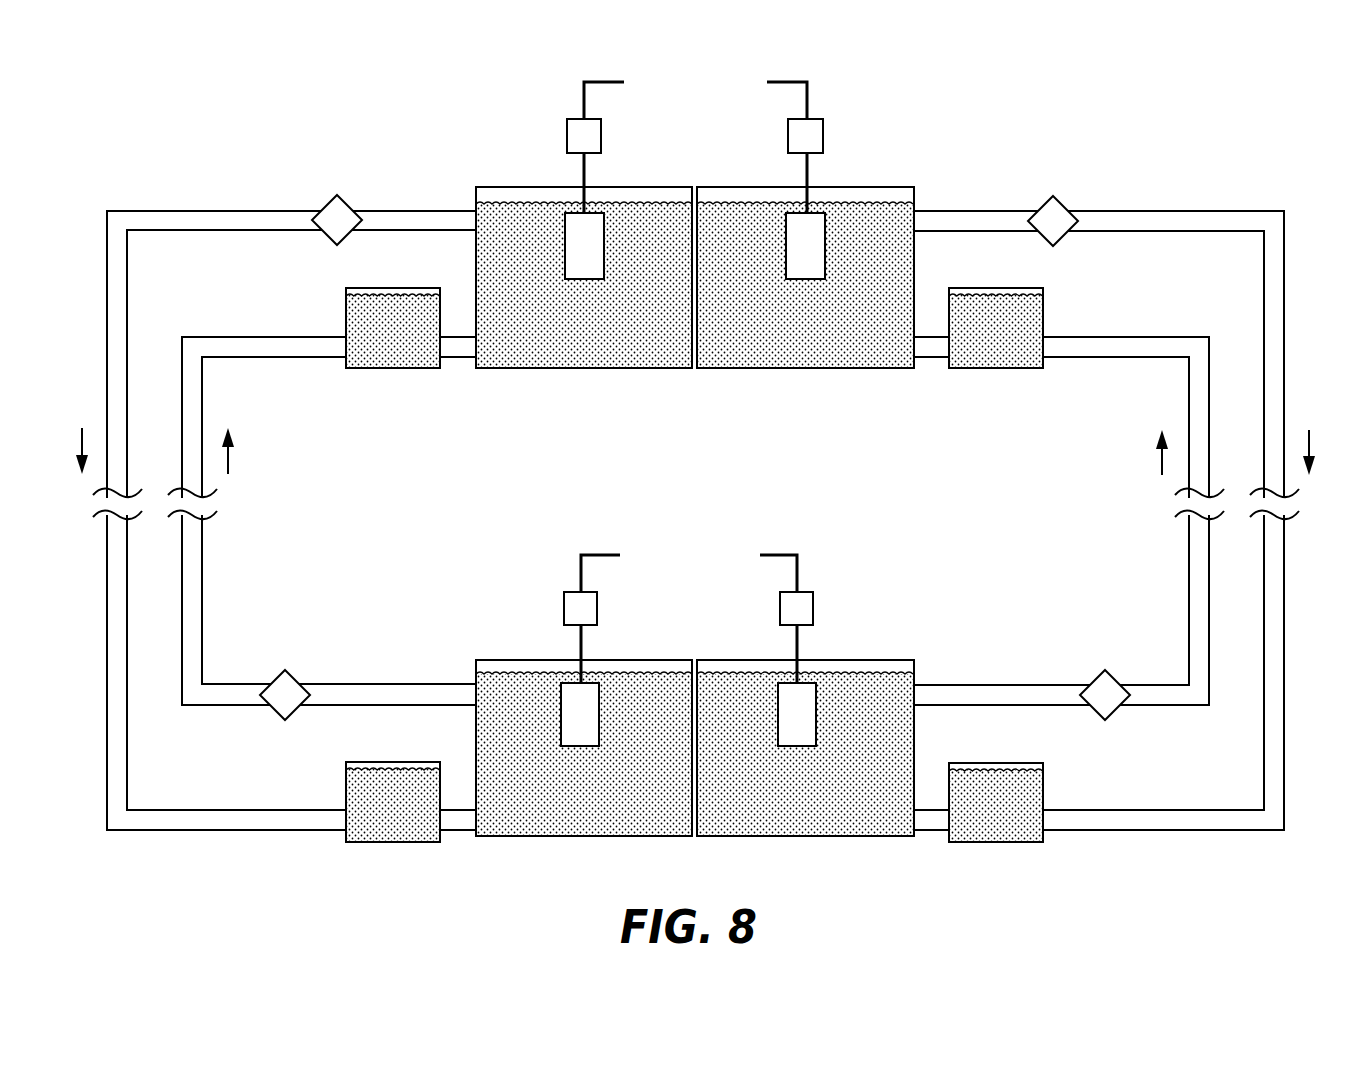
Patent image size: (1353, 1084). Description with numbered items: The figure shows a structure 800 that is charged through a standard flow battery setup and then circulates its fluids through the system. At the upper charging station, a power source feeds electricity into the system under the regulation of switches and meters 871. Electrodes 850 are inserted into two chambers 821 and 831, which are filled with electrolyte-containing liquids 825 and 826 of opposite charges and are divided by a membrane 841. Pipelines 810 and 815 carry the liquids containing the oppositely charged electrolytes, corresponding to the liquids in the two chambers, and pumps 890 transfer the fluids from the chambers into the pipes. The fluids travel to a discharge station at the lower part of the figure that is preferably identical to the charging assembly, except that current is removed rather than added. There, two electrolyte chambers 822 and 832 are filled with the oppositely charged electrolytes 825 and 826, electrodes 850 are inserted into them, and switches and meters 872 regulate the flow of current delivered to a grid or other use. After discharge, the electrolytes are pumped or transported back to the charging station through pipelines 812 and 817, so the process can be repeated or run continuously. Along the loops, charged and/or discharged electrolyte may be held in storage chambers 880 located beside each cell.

The structure 800 is at (1233, 142).
The pipeline 810 is at (1155, 211).
The pipeline 812 is at (1144, 337).
The pipeline 815 is at (227, 211).
The pipeline 817 is at (252, 337).
The chamber 821 is at (903, 187).
The electrolyte chamber 822 is at (893, 662).
The electrolyte-containing liquid 825 is at (800, 358).
The electrolyte-containing liquid 826 is at (582, 360).
The chamber 831 is at (518, 187).
The electrolyte chamber 832 is at (495, 660).
The membrane 841 is at (700, 218).
The electrode 850 is at (593, 225).
The switches and meters 871 is at (567, 133).
The switches and meters 872 is at (563, 608).
The chamber 880 is at (395, 288).
The pump 890 is at (348, 208).